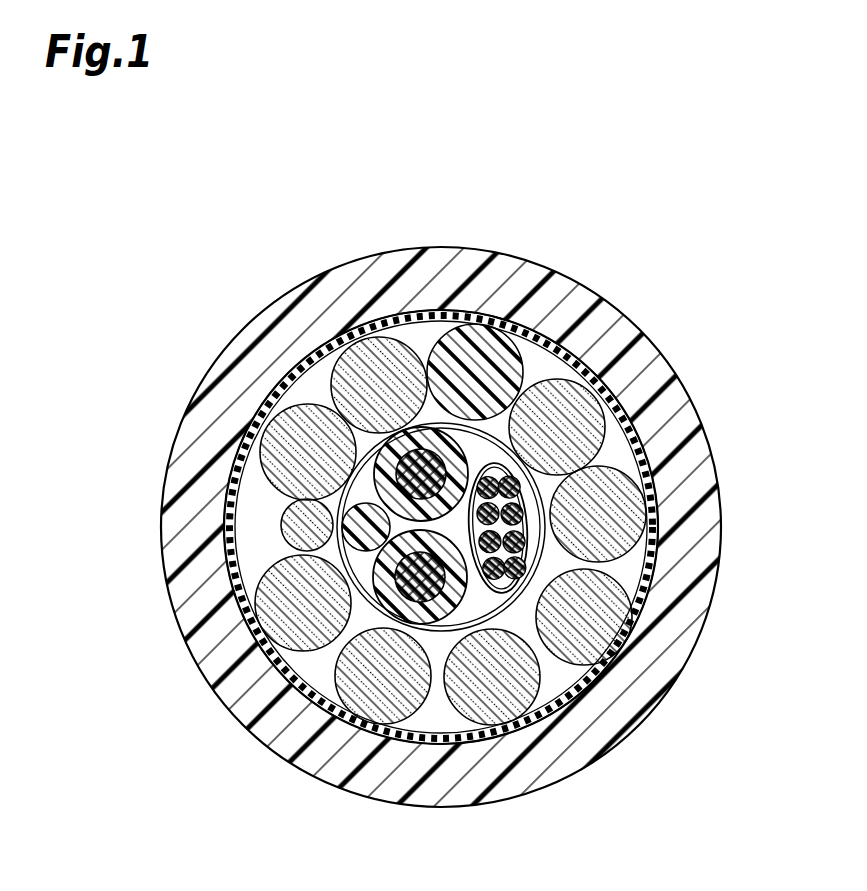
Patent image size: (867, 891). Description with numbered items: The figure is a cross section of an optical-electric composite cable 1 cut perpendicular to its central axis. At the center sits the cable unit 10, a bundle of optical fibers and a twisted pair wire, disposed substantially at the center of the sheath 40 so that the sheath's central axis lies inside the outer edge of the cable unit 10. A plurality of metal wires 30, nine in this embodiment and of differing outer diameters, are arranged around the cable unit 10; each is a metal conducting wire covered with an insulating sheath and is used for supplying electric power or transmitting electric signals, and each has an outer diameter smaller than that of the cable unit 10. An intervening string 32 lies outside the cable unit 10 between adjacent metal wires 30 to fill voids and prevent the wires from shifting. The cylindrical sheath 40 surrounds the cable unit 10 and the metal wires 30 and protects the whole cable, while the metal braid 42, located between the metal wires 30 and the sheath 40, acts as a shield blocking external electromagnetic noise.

The optical-electric composite cable 1 is at (694, 231).
The cable unit 10 is at (505, 413).
The metal wire 30 is at (347, 363).
The intervening string 32 is at (478, 333).
The sheath 40 is at (670, 662).
The metal braid 42 is at (383, 320).